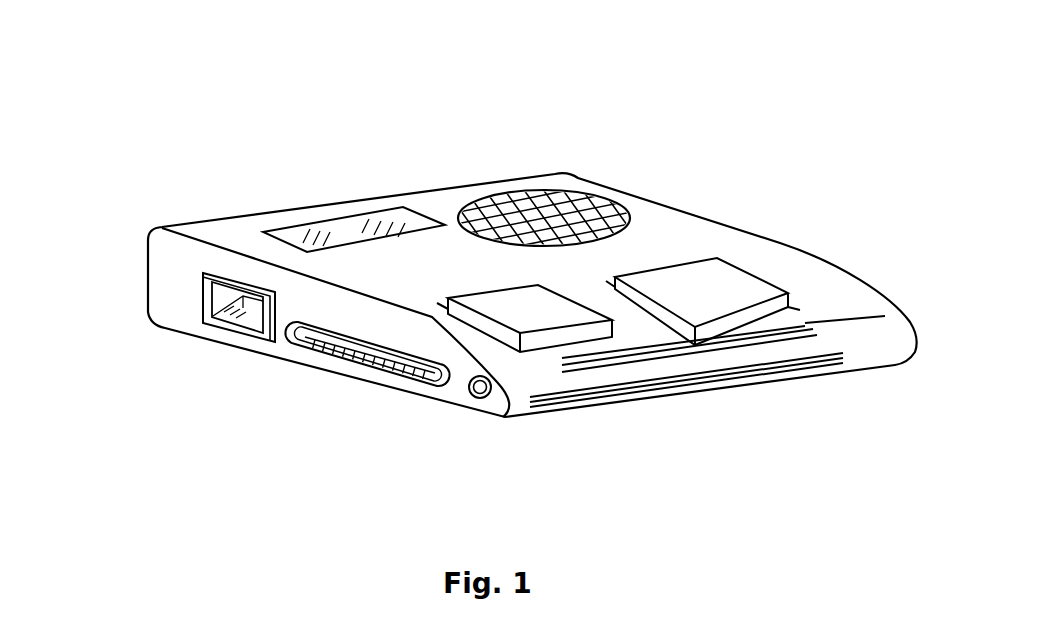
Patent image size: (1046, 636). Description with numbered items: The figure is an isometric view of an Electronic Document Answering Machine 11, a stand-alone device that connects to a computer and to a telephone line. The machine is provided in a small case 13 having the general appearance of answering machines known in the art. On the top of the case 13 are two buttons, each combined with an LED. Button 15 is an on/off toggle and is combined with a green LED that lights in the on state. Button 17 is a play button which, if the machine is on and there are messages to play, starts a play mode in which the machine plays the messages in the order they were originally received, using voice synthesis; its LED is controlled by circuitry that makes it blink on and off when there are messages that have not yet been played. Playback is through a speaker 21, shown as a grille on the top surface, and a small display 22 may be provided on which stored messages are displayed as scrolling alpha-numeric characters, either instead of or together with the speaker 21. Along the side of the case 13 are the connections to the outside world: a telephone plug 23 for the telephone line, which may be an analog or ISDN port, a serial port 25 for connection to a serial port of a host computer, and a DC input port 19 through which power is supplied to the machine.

The Electronic Document Answering Machine 11 is at (688, 100).
The case 13 is at (170, 255).
The button 15 is at (503, 302).
The button 17 is at (700, 285).
The DC input port 19 is at (468, 388).
The speaker 21 is at (522, 205).
The display 22 is at (372, 222).
The telephone plug 23 is at (218, 325).
The serial port 25 is at (333, 358).